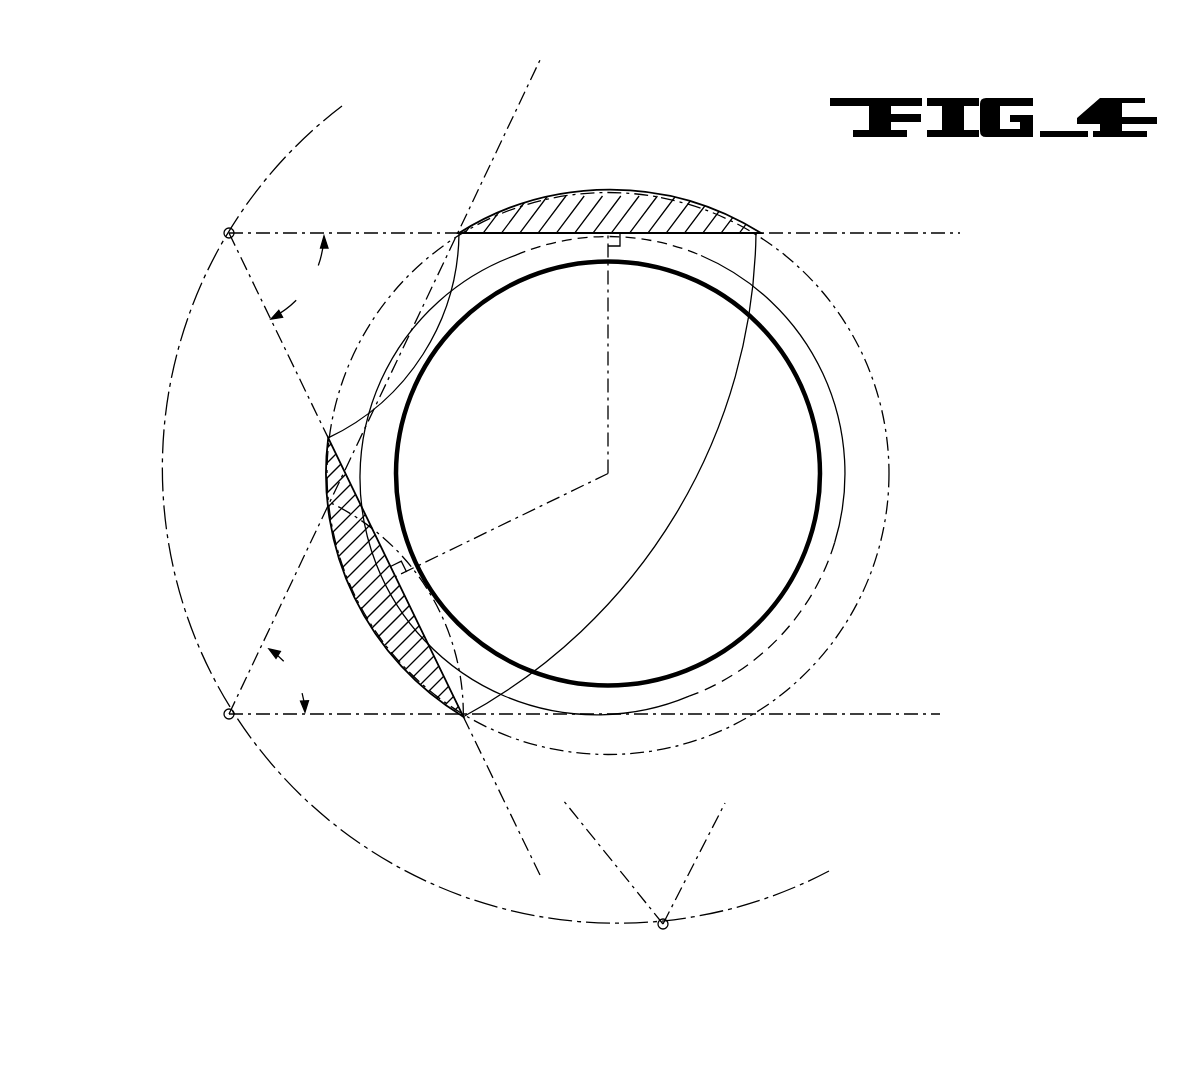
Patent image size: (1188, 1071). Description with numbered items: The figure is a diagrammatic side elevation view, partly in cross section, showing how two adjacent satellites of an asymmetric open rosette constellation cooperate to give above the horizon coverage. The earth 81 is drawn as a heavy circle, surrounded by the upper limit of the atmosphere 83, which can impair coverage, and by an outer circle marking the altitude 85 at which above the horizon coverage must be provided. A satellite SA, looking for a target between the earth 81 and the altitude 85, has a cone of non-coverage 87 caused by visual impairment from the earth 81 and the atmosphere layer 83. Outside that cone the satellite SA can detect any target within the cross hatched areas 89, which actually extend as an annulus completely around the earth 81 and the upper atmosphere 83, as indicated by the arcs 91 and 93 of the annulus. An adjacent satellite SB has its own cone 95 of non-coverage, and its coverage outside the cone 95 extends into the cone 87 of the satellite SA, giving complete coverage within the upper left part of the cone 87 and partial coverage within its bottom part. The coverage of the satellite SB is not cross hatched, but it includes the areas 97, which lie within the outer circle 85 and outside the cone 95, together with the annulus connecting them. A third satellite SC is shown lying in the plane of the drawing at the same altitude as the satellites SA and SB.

The earth 81 is at (815, 420).
The upper limit of the atmosphere 83 is at (822, 367).
The altitude at which above the horizon coverage must be provided 85 is at (842, 317).
The cone of non-coverage 87 is at (299, 277).
The cross hatched areas 89 is at (646, 204).
The arc of the annulus 91 is at (448, 310).
The arc of the annulus 93 is at (690, 492).
The cone of non-coverage 95 is at (289, 680).
The areas of above the horizon coverage 97 is at (392, 372).
The satellite SA is at (224, 231).
The satellite SB is at (224, 714).
The third satellite SC is at (667, 928).